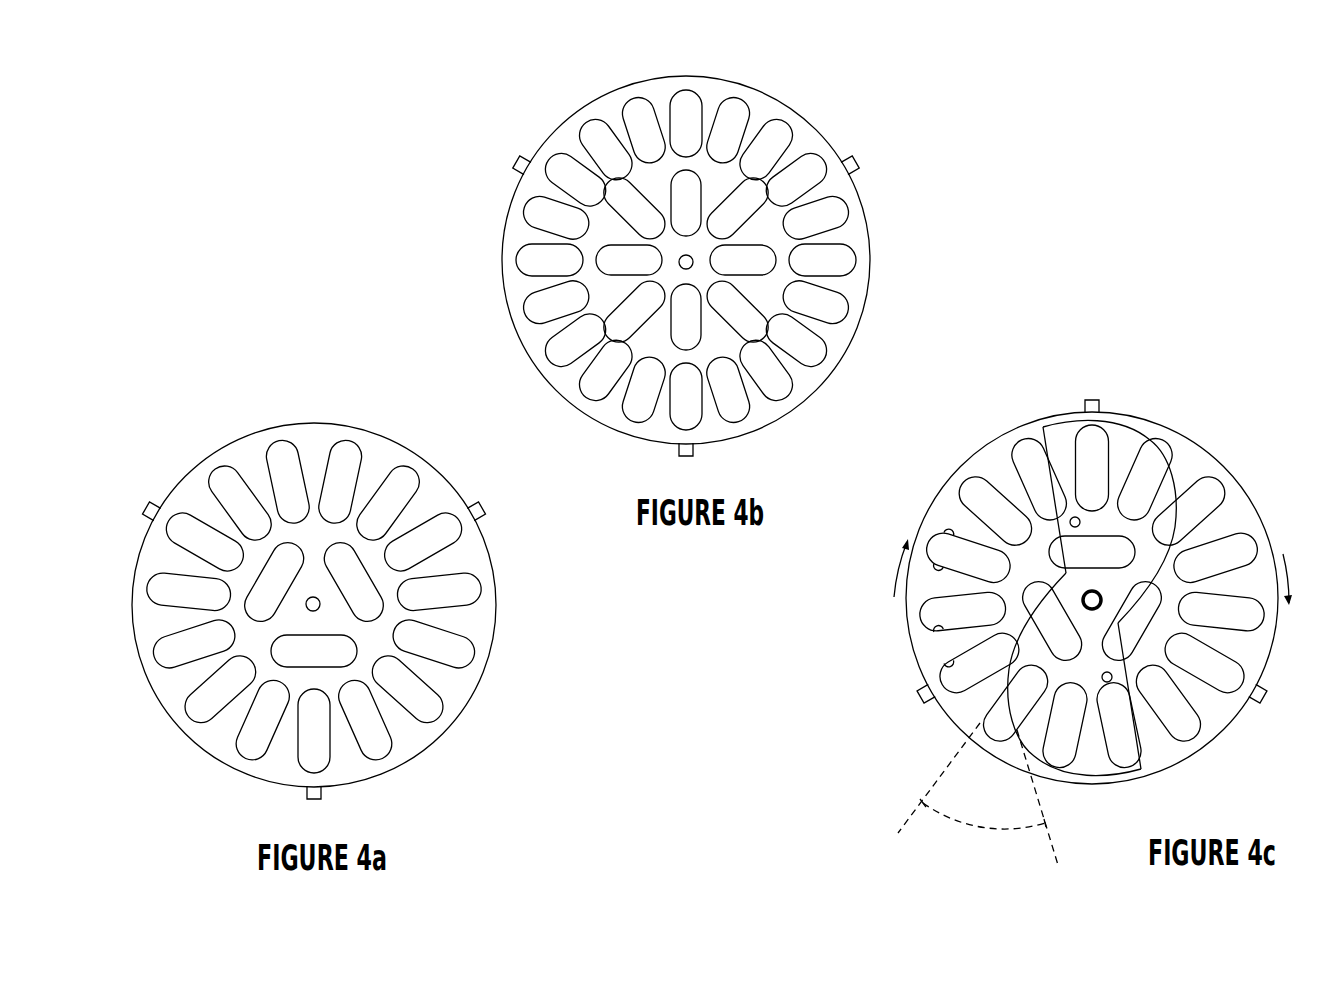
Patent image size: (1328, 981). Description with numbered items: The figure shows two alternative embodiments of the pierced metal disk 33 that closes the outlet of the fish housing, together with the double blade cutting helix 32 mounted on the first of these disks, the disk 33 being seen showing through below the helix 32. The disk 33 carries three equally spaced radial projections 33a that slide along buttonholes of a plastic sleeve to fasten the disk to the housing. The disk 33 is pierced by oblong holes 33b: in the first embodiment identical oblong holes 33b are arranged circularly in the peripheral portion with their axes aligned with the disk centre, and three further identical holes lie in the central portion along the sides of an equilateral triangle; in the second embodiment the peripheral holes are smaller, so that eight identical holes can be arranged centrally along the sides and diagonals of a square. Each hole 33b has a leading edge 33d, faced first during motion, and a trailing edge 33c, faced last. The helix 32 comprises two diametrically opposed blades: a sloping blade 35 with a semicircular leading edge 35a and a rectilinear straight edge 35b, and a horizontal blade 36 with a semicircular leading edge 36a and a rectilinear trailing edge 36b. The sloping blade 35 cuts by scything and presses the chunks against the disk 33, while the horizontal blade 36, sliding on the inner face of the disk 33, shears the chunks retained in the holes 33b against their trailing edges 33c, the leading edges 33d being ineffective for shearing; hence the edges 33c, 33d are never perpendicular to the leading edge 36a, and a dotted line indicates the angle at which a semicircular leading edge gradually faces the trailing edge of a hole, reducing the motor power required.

In FIG. 4C, the helix 32 is at (1055, 575).
In FIG. 4A, the pierced metal disk 33 is at (406, 418).
In FIG. 4B, the pierced metal disk 33 is at (797, 99).
In FIG. 4C, the pierced metal disk 33 is at (1057, 410).
In FIG. 4A, the radial projections 33a is at (152, 502).
In FIG. 4B, the radial projections 33a is at (521, 160).
In FIG. 4C, the radial projections 33a is at (1098, 400).
In FIG. 4A, the holes 33b is at (353, 582).
In FIG. 4B, the holes 33b is at (634, 203).
In FIG. 4C, the holes 33b is at (1213, 497).
In FIG. 4C, the trailing edges 33c is at (951, 533).
In FIG. 4C, the leading edges 33d is at (940, 567).
In FIG. 4C, the sloping blade 35 is at (1041, 698).
In FIG. 4C, the leading edge 35a is at (1010, 685).
In FIG. 4C, the straight edge of blade 35 35b is at (1142, 772).
In FIG. 4C, the horizontal blade 36 is at (1112, 495).
In FIG. 4C, the leading edge 36a is at (1167, 473).
In FIG. 4C, the trailing edge 36b is at (1043, 437).